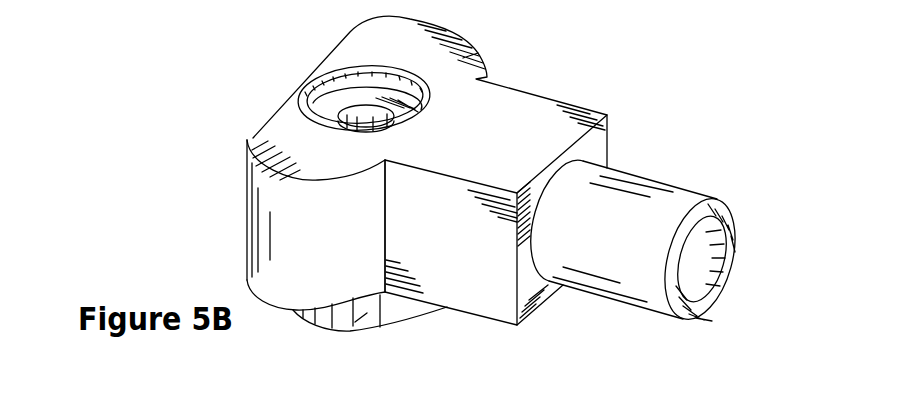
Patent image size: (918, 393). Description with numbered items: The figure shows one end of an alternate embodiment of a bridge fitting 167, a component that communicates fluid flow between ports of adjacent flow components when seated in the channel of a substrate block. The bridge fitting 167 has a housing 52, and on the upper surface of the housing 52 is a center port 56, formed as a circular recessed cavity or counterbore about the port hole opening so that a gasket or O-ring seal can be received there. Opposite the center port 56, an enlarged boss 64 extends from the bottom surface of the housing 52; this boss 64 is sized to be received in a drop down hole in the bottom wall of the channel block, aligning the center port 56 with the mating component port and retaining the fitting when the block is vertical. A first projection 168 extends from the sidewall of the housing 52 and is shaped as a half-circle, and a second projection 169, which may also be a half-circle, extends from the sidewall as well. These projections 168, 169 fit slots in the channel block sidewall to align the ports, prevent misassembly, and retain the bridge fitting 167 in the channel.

The housing 52 is at (495, 293).
The center port 56 is at (330, 90).
The enlarged boss 64 is at (350, 330).
The bridge fitting 167 is at (603, 72).
The first projection 168 is at (250, 141).
The second projection 169 is at (480, 47).